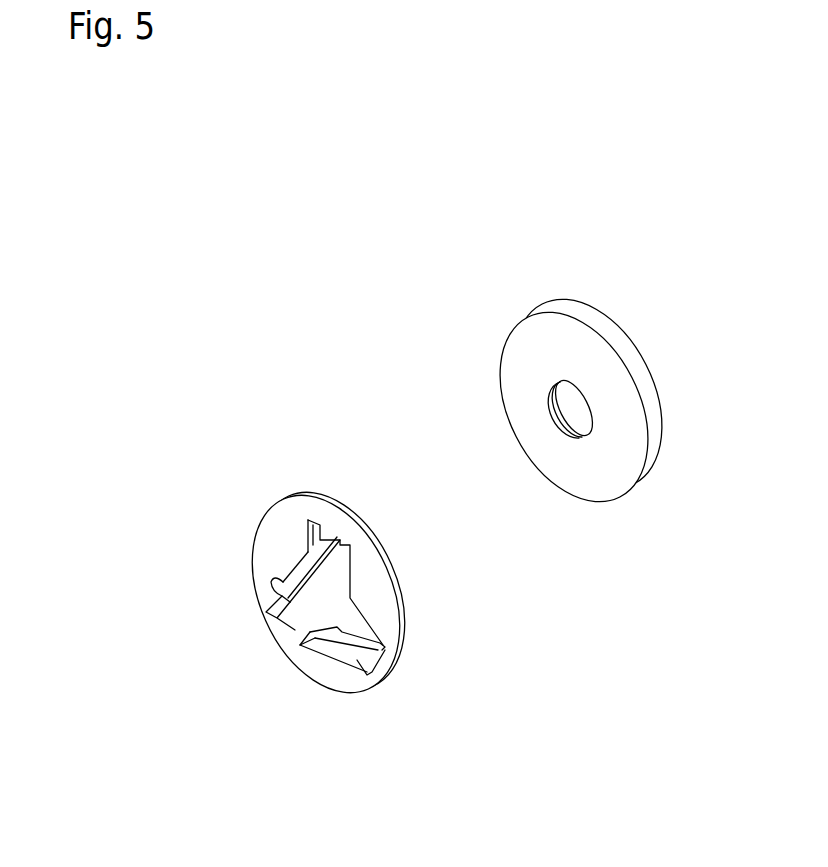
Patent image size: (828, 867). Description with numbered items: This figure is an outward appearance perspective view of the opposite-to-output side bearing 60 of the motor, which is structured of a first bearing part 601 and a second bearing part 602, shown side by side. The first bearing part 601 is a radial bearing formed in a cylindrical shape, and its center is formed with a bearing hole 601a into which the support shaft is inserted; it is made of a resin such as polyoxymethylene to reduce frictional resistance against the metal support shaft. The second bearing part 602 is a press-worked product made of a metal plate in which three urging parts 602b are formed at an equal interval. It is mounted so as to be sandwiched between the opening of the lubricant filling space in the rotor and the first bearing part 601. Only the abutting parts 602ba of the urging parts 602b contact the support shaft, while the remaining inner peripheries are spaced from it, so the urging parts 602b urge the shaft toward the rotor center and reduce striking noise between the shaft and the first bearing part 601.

The opposite-to-output side bearing 60 is at (325, 183).
The first bearing part 601 is at (478, 354).
The bearing hole 601a is at (529, 447).
The second bearing part 602 is at (297, 470).
The urging parts 602b is at (305, 567).
The abutting parts 602ba is at (225, 663).